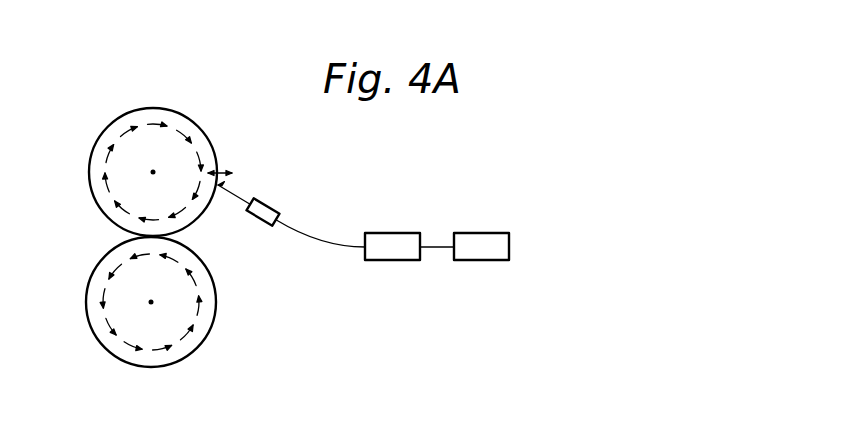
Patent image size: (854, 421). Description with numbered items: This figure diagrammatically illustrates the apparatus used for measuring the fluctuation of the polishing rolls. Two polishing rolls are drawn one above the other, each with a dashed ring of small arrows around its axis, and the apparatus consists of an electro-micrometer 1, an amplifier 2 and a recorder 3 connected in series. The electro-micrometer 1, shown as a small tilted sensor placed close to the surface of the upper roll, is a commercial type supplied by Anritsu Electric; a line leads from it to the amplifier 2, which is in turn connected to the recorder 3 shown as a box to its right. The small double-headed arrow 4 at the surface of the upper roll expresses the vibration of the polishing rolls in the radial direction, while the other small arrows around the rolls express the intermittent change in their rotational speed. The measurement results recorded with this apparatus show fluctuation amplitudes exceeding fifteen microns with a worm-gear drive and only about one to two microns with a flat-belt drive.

The electro-micrometer 1 is at (270, 207).
The amplifier 2 is at (402, 236).
The recorder 3 is at (492, 236).
The small arrows 4 is at (222, 167).